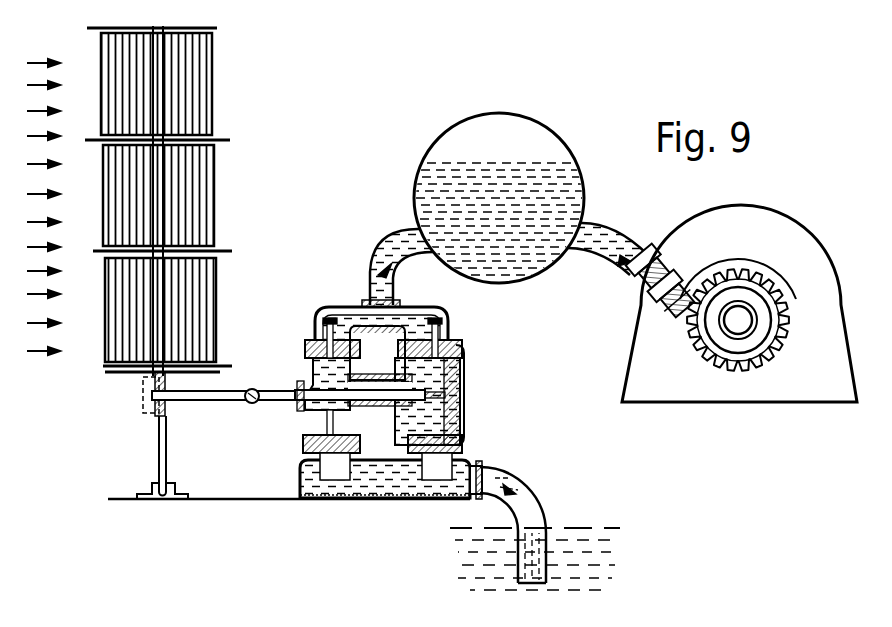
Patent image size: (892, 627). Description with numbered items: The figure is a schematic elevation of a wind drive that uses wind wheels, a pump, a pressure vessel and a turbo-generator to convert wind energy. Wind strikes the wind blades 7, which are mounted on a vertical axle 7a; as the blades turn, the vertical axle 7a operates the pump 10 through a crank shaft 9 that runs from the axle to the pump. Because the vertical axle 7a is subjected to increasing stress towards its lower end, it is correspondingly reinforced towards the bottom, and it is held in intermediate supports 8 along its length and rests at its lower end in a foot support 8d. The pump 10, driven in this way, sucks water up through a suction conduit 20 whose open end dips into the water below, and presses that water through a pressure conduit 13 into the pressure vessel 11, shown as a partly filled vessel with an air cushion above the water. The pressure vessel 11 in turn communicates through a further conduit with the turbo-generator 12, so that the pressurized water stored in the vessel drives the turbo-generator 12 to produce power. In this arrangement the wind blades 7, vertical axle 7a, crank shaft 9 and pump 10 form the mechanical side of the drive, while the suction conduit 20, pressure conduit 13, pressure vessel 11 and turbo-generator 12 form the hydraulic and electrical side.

The wind blades 7 is at (214, 226).
The vertical axle 7a is at (167, 449).
The intermediate supports 8 is at (152, 373).
The foot support 8d is at (173, 494).
The crank shaft 9 is at (150, 411).
The pump 10 is at (418, 466).
The pressure vessel 11 is at (425, 190).
The turbo-generator 12 is at (776, 390).
The pressure conduit 13 is at (380, 262).
The suction conduit 20 is at (533, 510).